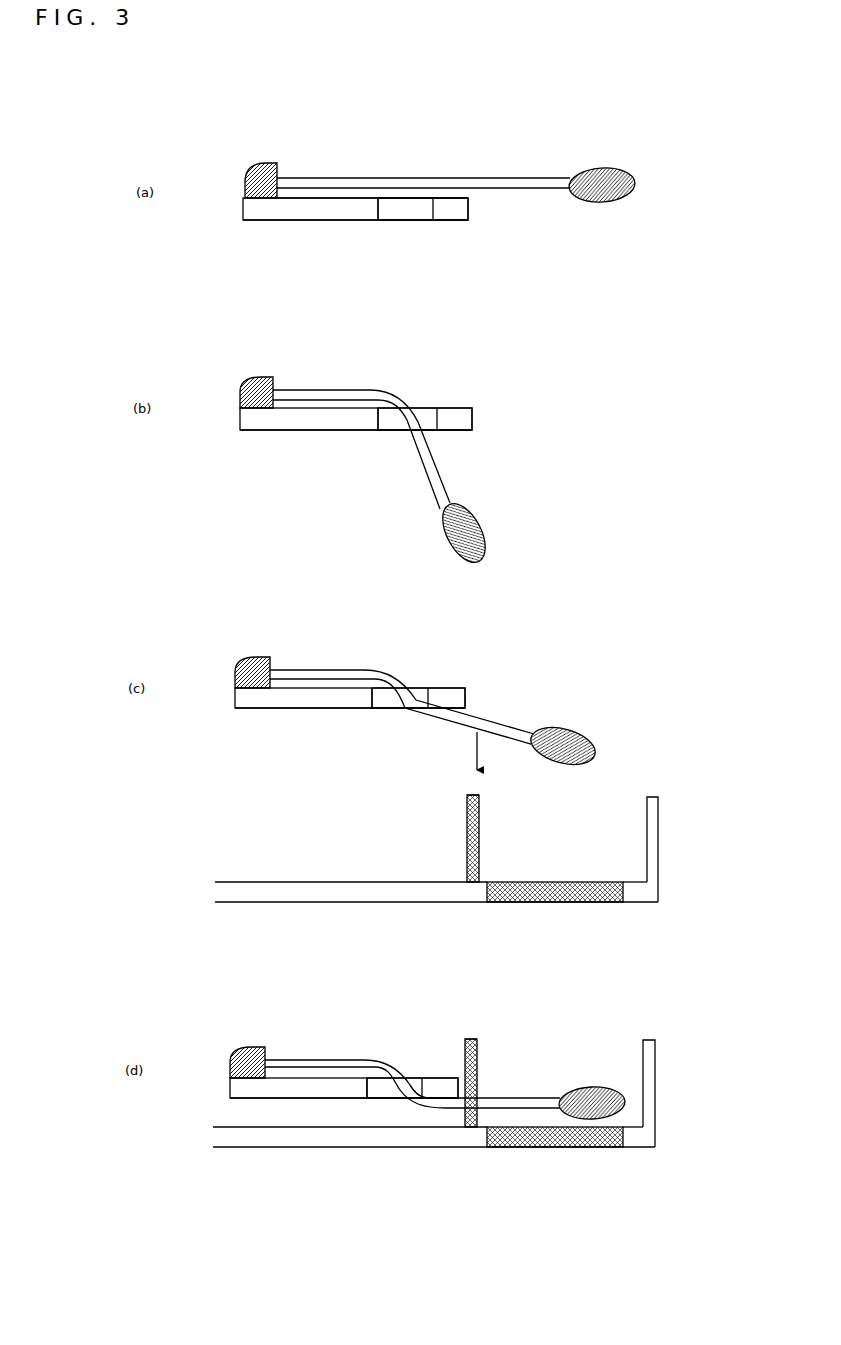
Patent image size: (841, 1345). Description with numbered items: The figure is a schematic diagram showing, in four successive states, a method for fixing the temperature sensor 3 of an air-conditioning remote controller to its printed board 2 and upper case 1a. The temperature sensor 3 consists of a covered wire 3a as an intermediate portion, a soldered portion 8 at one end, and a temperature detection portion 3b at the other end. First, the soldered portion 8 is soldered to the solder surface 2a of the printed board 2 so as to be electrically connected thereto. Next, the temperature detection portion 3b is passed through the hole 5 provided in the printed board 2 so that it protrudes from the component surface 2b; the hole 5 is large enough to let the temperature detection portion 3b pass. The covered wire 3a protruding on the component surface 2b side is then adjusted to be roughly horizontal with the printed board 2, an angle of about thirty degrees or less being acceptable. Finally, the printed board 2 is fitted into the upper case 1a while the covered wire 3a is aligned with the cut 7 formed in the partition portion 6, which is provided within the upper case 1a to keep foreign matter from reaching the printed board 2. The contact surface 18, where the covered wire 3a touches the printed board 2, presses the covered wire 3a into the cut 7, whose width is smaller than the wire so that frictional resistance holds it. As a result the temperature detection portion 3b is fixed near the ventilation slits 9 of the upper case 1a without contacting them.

The upper case 1a is at (654, 800).
The printed board 2 is at (346, 224).
The solder surface 2a is at (306, 202).
The component surface 2b is at (316, 222).
The temperature sensor 3 is at (456, 178).
The covered wire 3a is at (344, 180).
The temperature detection portion 3b is at (632, 180).
The hole 5 is at (384, 225).
The partition portion 6 is at (481, 792).
The cut 7 is at (480, 830).
The soldered portion 8 is at (272, 165).
The ventilation slits 9 is at (562, 882).
The contact surface 18 is at (448, 1100).